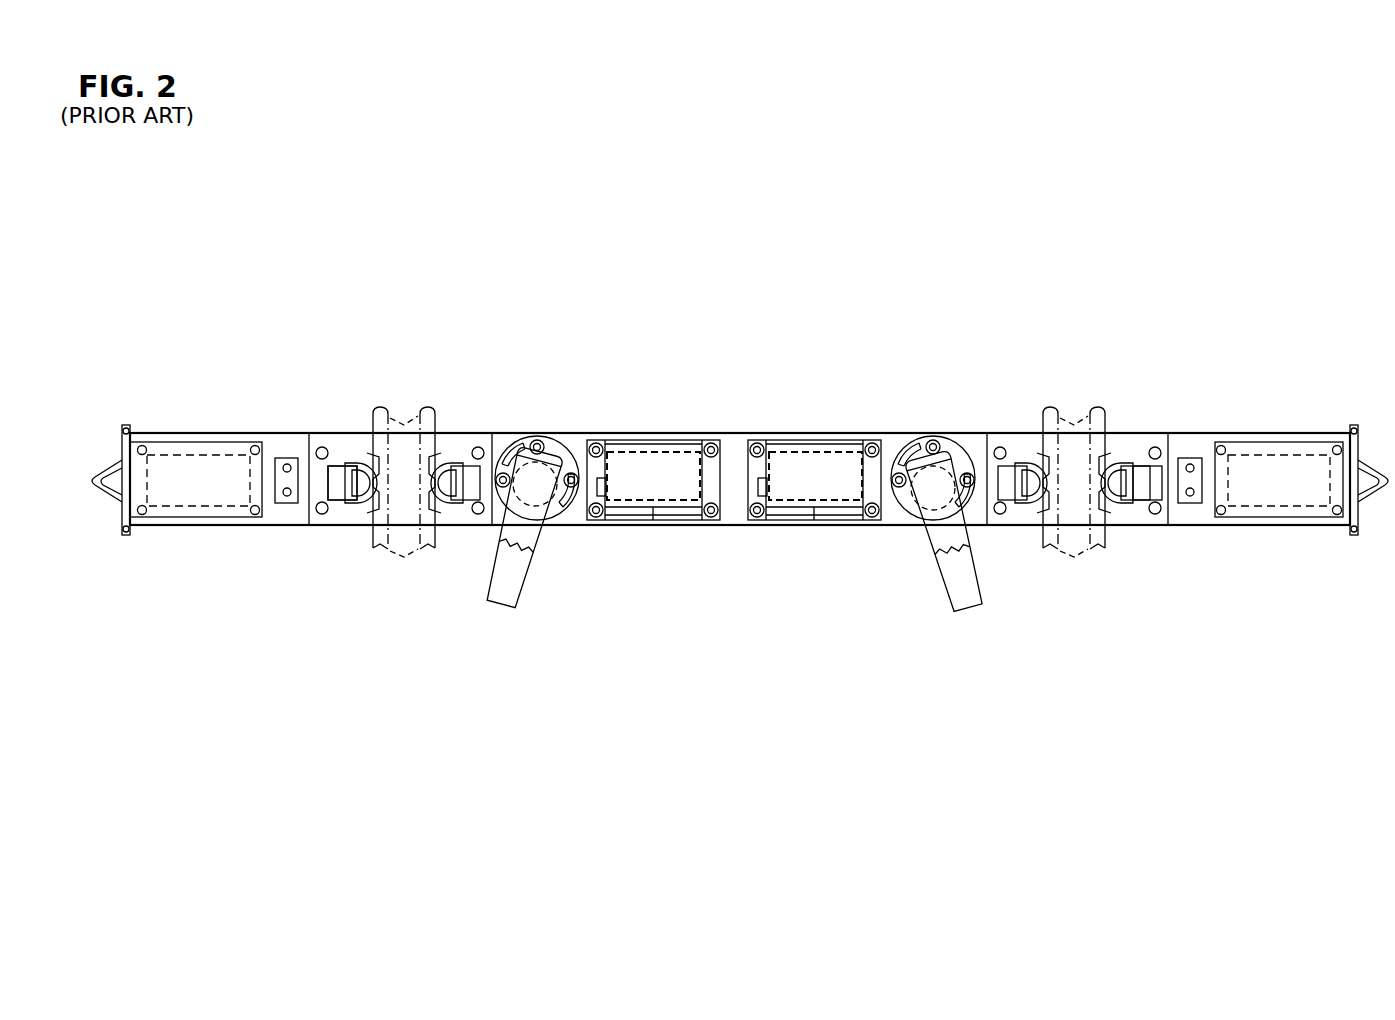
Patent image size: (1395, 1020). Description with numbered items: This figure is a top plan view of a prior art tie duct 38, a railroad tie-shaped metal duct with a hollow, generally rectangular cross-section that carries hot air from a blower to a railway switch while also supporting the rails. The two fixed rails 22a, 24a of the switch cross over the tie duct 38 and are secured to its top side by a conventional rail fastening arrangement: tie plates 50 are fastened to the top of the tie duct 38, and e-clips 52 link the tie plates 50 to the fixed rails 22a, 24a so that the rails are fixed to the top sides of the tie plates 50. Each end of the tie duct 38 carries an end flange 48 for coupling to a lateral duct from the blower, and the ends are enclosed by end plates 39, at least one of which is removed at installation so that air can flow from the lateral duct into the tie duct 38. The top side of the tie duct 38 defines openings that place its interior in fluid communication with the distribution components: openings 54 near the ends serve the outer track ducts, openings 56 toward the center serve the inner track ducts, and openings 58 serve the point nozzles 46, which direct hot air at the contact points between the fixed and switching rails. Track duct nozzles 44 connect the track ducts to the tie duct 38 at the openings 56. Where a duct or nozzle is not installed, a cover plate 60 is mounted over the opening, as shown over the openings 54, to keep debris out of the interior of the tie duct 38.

The fixed rail 22a is at (392, 410).
The fixed rail 24a is at (1072, 420).
The tie duct 38 is at (248, 426).
The end plate 39 is at (123, 517).
The track duct nozzle 44 is at (676, 452).
The point nozzle 46 is at (516, 592).
The end flange 48 is at (125, 425).
The tie plate 50 is at (349, 517).
The e-clip 52 is at (355, 462).
The opening 54 is at (208, 508).
The opening 56 is at (646, 452).
The opening 58 is at (553, 455).
The cover plate 60 is at (185, 445).